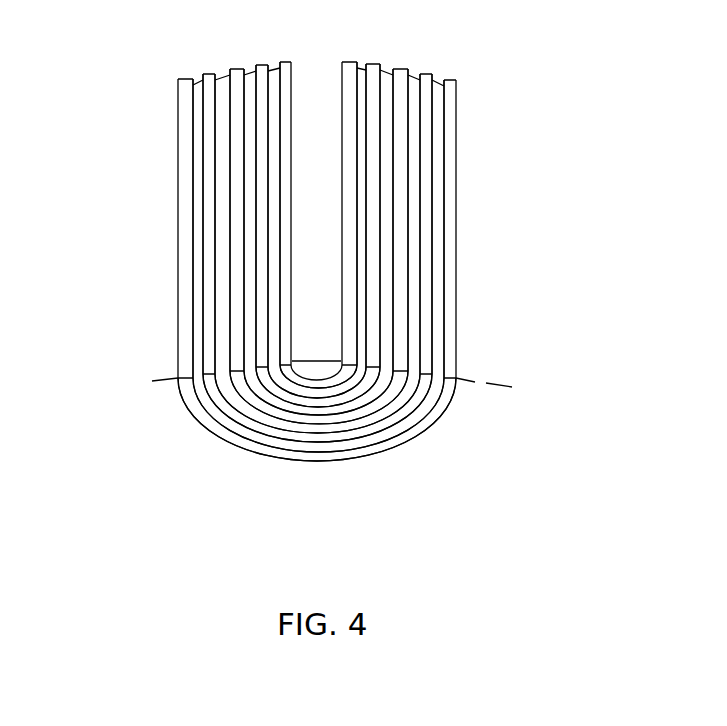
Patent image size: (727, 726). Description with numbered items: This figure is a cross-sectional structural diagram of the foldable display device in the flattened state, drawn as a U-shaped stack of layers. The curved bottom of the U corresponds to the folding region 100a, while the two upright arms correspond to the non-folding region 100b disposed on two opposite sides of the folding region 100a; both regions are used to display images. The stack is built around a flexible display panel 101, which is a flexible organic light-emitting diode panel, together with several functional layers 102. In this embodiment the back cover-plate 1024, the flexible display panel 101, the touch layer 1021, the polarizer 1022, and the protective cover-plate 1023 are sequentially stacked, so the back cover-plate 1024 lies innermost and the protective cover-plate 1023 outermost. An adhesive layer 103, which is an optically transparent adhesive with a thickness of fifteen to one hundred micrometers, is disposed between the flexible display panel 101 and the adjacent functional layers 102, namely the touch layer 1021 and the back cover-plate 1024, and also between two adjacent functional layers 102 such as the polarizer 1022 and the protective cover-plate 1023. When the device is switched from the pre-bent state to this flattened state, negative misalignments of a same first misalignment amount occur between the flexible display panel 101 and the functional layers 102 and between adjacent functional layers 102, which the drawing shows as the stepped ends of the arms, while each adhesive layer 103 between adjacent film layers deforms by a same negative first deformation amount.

The folding region 100a is at (353, 494).
The non-folding region 100b is at (492, 83).
The flexible display panel 101 is at (372, 168).
The functional layer 102 is at (327, 297).
The touch layer 1021 is at (400, 238).
The polarizer 1022 is at (425, 300).
The protective cover-plate 1023 is at (449, 352).
The back cover-plate 1024 is at (348, 102).
The adhesive layer 103 is at (362, 135).